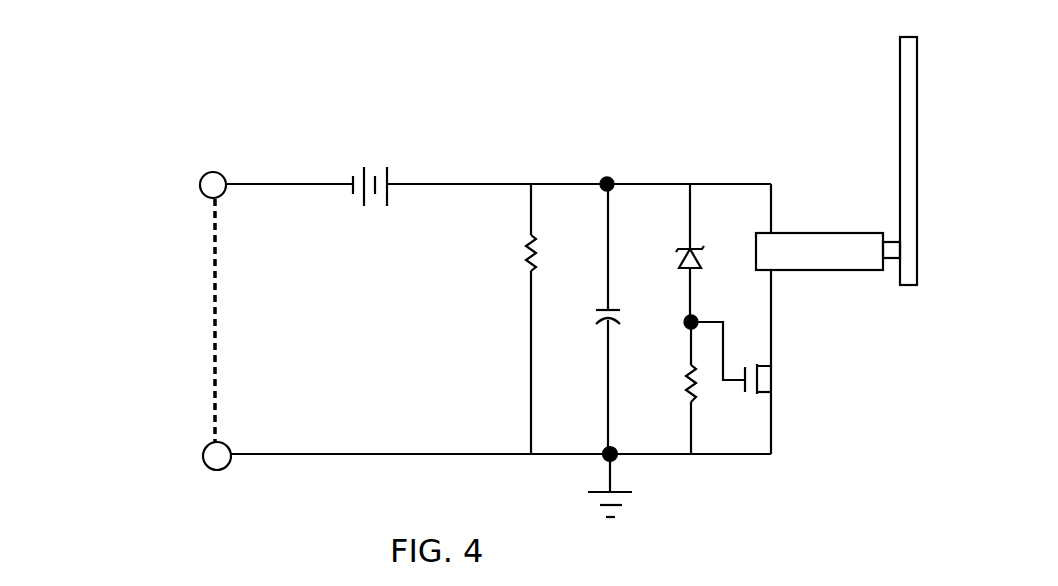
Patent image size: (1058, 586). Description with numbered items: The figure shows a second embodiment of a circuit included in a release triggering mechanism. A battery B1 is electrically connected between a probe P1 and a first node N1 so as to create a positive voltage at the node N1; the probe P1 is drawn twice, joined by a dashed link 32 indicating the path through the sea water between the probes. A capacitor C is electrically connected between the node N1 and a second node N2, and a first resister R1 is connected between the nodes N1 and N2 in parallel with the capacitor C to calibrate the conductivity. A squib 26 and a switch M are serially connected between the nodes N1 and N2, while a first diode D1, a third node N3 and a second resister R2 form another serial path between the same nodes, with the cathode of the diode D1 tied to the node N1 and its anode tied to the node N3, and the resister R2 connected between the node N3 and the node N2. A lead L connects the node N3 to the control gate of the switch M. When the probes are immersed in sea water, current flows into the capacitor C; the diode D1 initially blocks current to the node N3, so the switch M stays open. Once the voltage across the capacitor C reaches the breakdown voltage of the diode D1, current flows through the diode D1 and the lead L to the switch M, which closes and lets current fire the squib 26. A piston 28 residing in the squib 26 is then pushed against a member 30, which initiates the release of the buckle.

The probe P1 is at (207, 185).
The connection between pins 32 is at (210, 323).
The battery B1 is at (362, 182).
The first resister R1 is at (530, 250).
The first node N1 is at (612, 178).
The capacitor C is at (600, 323).
The first diode D1 is at (688, 270).
The third node N3 is at (700, 316).
The second resister R2 is at (690, 385).
The lead L is at (728, 383).
The switch M is at (774, 362).
The second node N2 is at (612, 458).
The squib 26 is at (808, 255).
The piston 28 is at (893, 250).
The member 30 is at (907, 86).